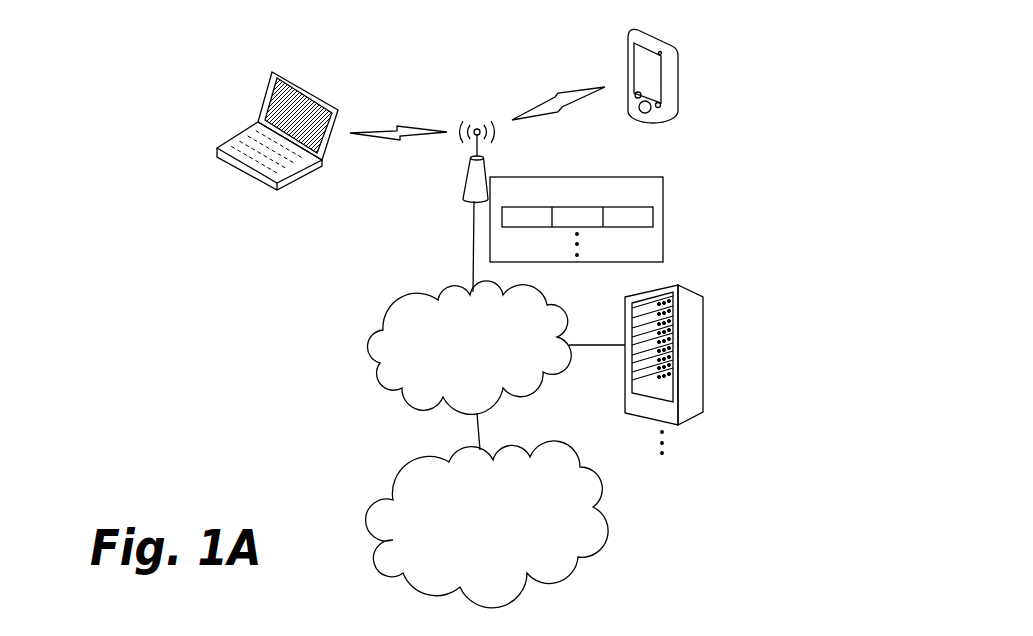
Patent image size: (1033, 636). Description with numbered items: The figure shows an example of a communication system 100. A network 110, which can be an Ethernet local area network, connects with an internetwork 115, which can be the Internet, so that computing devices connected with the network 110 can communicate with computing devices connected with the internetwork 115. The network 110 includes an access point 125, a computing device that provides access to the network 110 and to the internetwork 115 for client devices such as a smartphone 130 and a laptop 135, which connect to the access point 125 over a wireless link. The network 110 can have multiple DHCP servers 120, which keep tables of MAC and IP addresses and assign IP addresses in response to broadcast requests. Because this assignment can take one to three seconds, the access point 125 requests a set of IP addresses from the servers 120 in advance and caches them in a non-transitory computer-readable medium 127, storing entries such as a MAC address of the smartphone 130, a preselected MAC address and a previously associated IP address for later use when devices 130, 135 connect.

The communication system 100 is at (124, 58).
The network 110 is at (372, 348).
The internetwork 115 is at (370, 527).
The DHCP server 120 is at (703, 352).
The access point 125 is at (486, 172).
The non-transitory computer-readable medium 127 is at (578, 177).
The smartphone 130 is at (678, 70).
The laptop 135 is at (218, 146).